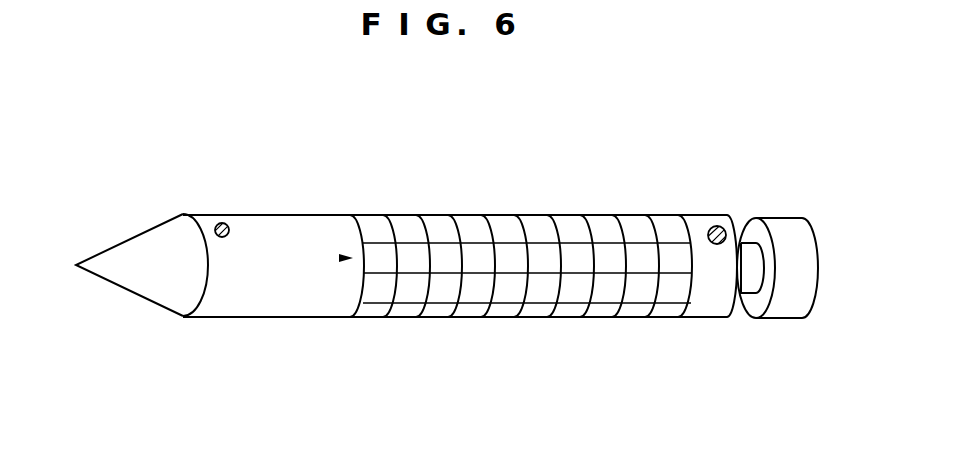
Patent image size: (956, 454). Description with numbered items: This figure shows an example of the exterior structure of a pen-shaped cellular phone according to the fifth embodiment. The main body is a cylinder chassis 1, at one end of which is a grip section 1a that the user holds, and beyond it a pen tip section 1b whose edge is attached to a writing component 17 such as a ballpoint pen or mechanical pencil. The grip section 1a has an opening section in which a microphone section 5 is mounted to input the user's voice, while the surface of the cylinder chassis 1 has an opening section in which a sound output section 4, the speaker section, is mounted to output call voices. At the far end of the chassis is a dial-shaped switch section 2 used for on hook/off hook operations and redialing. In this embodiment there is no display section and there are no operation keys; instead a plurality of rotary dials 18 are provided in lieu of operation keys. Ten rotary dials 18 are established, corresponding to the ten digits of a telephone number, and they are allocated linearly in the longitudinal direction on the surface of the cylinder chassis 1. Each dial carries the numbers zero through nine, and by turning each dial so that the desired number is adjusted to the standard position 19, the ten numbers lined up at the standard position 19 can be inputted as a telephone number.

The cylinder chassis 1 is at (456, 336).
The grip section 1a is at (287, 308).
The pen tip section 1b is at (146, 297).
The writing component 17 is at (76, 265).
The microphone section 5 is at (223, 223).
The sound output section 4 is at (718, 226).
The rotary dials 18 is at (470, 217).
The standard position 19 is at (341, 258).
The dial-shaped switch section 2 is at (776, 219).